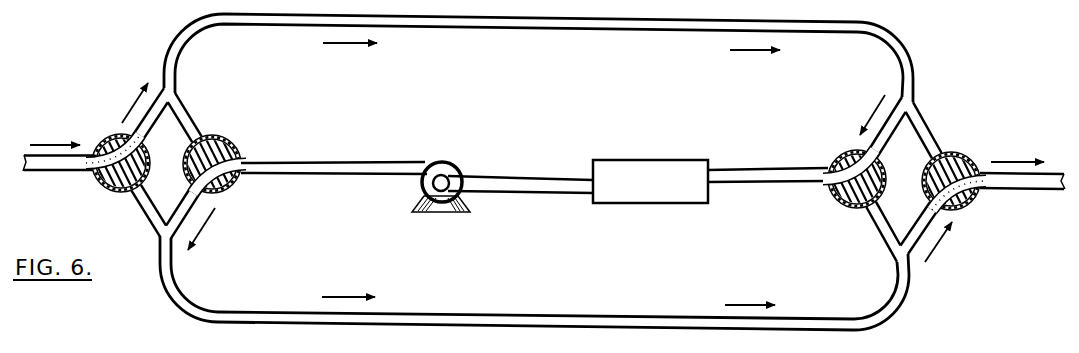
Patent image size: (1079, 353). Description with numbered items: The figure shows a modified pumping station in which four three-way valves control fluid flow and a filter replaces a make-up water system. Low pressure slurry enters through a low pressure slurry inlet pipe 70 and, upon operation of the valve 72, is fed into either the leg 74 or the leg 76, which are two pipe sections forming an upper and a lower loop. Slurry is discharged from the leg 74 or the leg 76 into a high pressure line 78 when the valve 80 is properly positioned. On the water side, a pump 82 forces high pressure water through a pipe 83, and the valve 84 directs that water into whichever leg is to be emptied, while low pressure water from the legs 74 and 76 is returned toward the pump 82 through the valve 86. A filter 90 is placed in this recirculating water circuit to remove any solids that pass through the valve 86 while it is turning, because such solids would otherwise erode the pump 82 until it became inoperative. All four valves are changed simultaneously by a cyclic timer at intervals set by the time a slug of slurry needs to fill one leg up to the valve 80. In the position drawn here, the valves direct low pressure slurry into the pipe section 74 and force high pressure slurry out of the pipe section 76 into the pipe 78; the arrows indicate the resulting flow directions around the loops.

The low pressure slurry inlet pipe 70 is at (27, 167).
The valve 72 is at (92, 181).
The leg 74 is at (578, 32).
The leg 76 is at (570, 313).
The high pressure line 78 is at (1048, 186).
The valve 80 is at (976, 162).
The pump 82 is at (456, 170).
The pipe 83 is at (368, 162).
The valve 84 is at (226, 146).
The valve 86 is at (845, 156).
The filter 90 is at (645, 160).